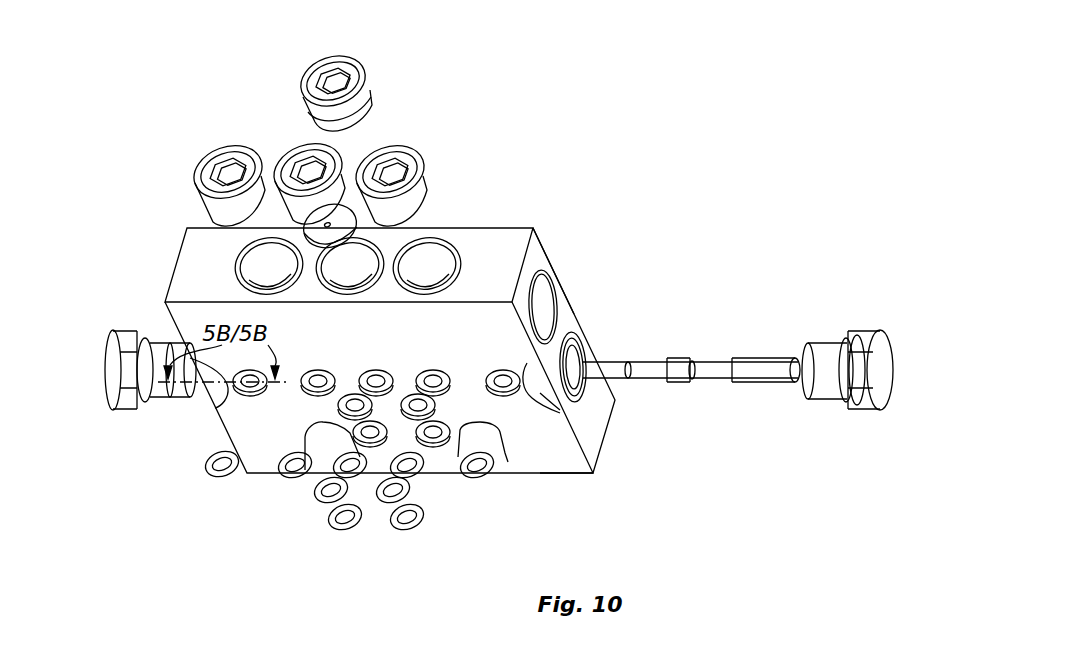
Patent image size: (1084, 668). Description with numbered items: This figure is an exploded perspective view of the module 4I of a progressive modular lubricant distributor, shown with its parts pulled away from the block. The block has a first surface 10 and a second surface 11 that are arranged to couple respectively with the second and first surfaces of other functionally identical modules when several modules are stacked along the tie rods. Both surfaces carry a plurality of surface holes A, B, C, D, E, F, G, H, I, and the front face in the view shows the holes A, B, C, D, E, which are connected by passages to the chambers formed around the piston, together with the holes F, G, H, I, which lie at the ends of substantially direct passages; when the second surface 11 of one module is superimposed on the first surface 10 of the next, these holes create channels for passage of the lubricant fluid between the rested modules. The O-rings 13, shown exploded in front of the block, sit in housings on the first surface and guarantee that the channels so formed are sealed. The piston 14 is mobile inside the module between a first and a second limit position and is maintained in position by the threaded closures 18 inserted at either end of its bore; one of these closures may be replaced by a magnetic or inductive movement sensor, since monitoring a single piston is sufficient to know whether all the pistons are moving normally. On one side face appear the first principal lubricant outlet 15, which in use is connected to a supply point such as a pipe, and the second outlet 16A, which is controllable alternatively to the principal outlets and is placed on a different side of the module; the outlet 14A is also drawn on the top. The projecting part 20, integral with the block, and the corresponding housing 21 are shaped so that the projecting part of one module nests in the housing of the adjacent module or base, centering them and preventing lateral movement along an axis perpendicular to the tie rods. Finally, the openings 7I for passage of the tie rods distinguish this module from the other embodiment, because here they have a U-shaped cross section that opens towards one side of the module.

The first surface 10 is at (193, 325).
The second surface 11 is at (553, 248).
The O-rings 13 is at (475, 480).
The piston 14 is at (681, 368).
The top bore 14A is at (436, 256).
The first principal lubricant outlet 15 is at (543, 310).
The second outlet 16A is at (268, 268).
The threaded closures 18 is at (880, 390).
The projecting part 20 is at (583, 428).
The housing 21 is at (578, 316).
The module 4I is at (567, 458).
The openings 7I is at (503, 462).
The surface hole A is at (500, 374).
The surface hole B is at (431, 372).
The surface hole C is at (373, 372).
The surface hole D is at (317, 372).
The surface hole E is at (248, 393).
The surface hole F is at (343, 402).
The surface hole G is at (433, 404).
The surface hole H is at (452, 430).
The surface hole I is at (353, 425).